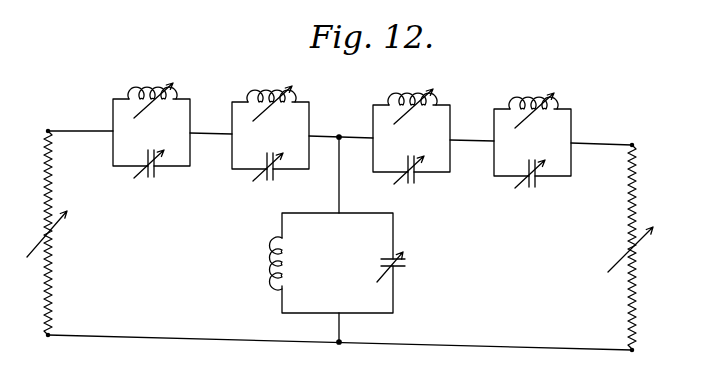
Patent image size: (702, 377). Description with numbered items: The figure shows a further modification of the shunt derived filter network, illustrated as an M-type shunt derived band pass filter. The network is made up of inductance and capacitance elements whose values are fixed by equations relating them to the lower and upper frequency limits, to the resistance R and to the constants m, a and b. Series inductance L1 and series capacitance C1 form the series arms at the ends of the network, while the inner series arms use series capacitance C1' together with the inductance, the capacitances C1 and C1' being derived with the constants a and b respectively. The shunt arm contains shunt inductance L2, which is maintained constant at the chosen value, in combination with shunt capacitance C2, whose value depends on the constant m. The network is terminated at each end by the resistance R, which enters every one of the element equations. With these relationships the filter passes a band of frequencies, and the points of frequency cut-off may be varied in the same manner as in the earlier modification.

The series inductance L1 is at (146, 80).
The series capacitance C1 is at (337, 183).
The series capacitance C1' is at (336, 182).
The shunt inductance L2 is at (318, 263).
The shunt capacitance C2 is at (421, 259).
The resistance R is at (340, 240).